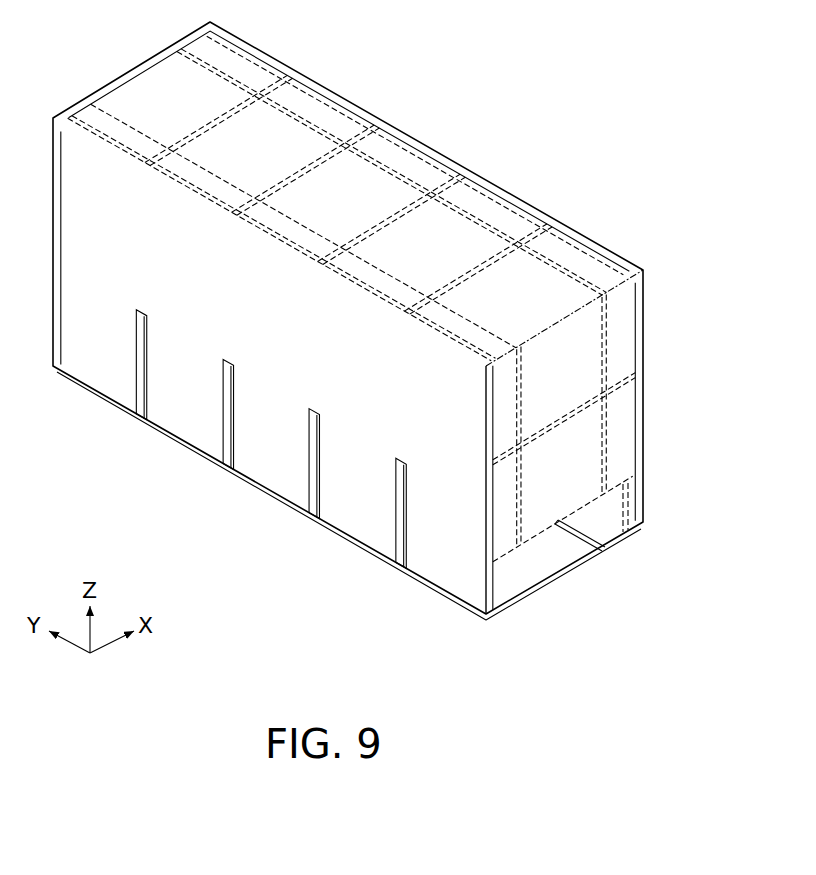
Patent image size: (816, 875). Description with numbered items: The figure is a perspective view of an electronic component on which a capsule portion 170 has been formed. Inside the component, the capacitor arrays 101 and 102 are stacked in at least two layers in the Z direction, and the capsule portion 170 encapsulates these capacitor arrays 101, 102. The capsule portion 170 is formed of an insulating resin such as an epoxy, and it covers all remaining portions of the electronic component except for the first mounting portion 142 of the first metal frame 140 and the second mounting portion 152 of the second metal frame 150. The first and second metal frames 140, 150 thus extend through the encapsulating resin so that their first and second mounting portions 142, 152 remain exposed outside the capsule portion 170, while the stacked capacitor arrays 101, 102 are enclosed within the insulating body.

The capacitor array 102 is at (110, 80).
The capsule portion 170 is at (337, 94).
The capacitor array 101 is at (610, 455).
The second metal frame 150 is at (616, 554).
The second mounting portion 152 is at (626, 540).
The first metal frame 140 is at (430, 594).
The first mounting portion 142 is at (461, 609).